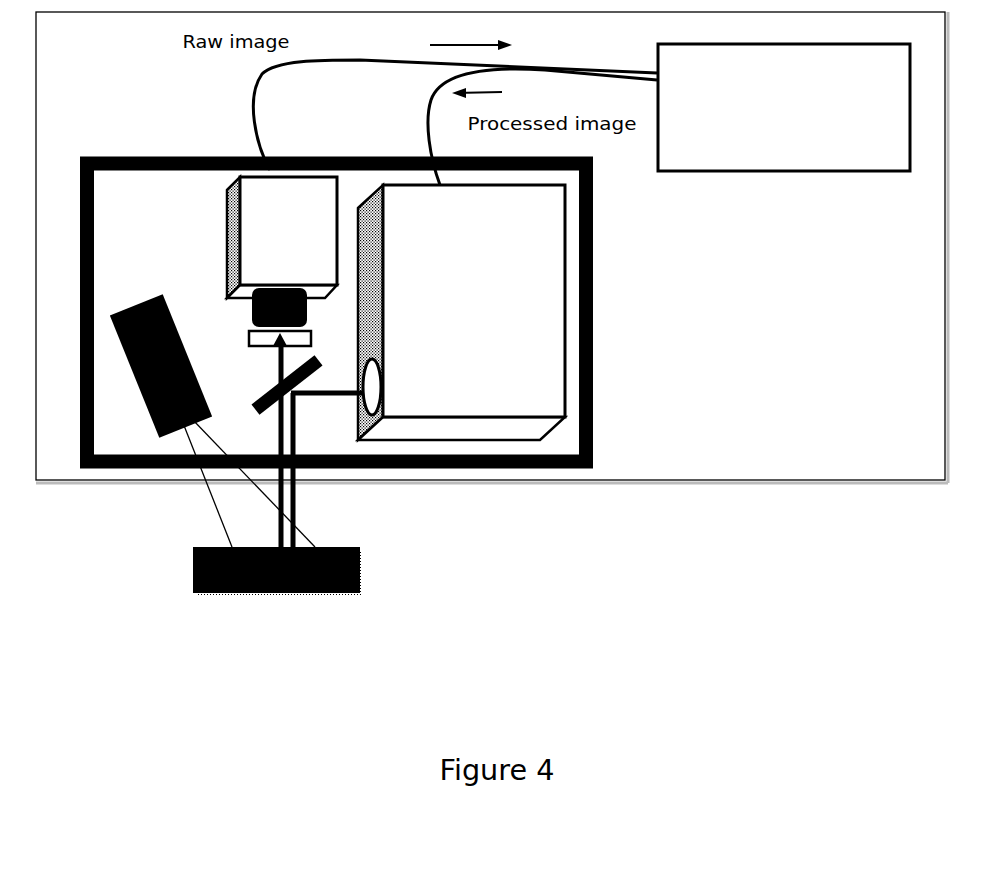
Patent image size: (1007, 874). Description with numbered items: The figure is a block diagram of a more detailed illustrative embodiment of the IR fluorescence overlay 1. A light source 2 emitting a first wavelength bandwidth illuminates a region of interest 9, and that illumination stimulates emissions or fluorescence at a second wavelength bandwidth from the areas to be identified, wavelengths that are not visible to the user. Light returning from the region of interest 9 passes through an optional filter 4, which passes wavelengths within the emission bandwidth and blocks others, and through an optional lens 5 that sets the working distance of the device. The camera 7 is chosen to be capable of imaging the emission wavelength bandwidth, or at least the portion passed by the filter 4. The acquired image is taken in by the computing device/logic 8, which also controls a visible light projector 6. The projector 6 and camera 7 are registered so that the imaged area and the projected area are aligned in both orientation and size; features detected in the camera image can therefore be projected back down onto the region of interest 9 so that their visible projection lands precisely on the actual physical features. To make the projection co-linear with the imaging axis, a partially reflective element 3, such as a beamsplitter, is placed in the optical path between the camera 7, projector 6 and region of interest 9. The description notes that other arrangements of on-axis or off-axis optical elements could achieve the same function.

The IR fluorescence overlay 1 is at (834, 290).
The light source 2 is at (127, 397).
The partially reflective element 3 is at (272, 386).
The filter 4 is at (249, 338).
The lens 5 is at (309, 312).
The visible light projector 6 is at (480, 331).
The camera 7 is at (311, 216).
The computing device/logic 8 is at (869, 138).
The region of interest 9 is at (267, 587).